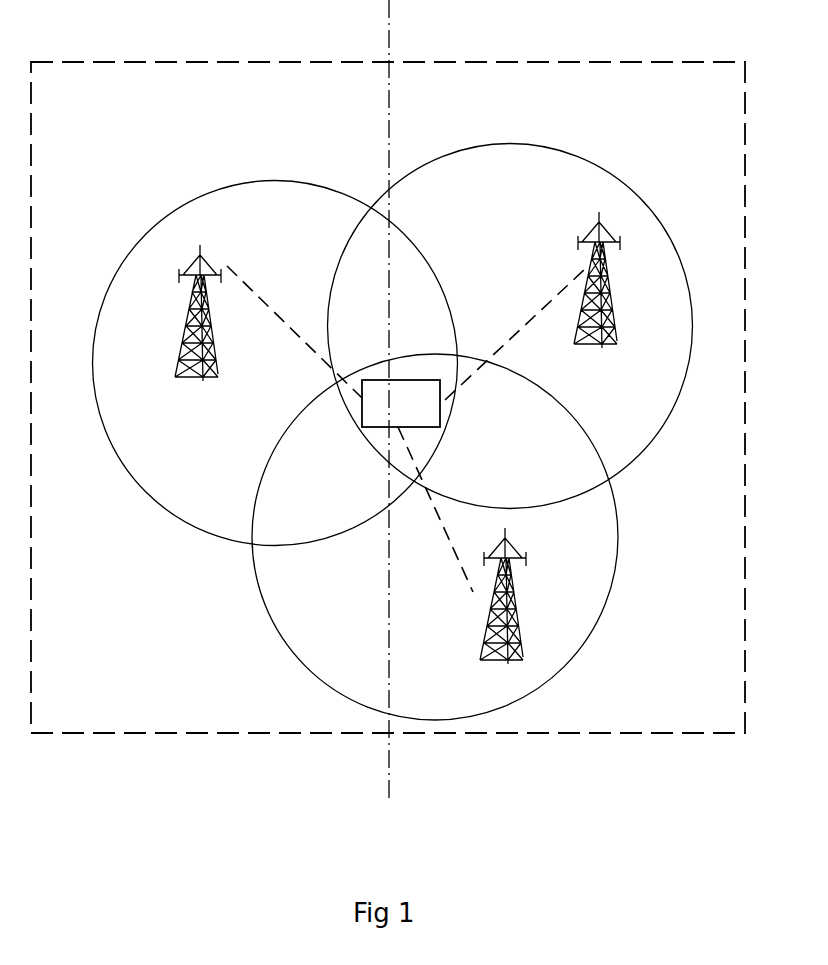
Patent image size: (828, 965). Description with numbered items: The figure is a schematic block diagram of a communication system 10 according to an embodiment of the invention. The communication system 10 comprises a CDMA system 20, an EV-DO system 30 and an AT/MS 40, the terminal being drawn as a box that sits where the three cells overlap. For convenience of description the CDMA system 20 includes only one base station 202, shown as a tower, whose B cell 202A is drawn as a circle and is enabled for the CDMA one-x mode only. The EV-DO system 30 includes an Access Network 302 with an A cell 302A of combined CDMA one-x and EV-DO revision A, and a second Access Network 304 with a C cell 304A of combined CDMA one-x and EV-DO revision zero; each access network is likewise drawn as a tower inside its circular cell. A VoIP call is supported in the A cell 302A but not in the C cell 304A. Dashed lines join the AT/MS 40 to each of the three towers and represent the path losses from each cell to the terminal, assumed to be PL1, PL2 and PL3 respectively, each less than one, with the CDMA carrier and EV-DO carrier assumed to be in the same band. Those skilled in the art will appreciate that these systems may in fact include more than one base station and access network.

The communication system 10 is at (460, 62).
The CDMA system 20 is at (220, 108).
The EV-DO system 30 is at (500, 108).
The AT/MS 40 is at (401, 418).
The base station 202 is at (198, 328).
The B cell 202A is at (160, 222).
The Access Network 302 is at (597, 297).
The A cell 302A is at (615, 175).
The Access Network 304 is at (503, 610).
The C cell 304A is at (614, 575).
The path loss PL1 is at (515, 334).
The path loss PL2 is at (294, 332).
The path loss PL3 is at (435, 509).